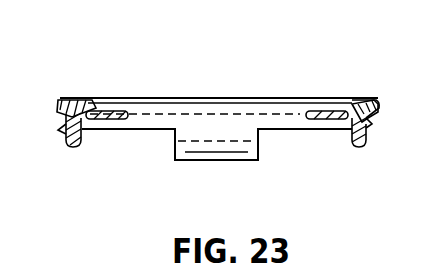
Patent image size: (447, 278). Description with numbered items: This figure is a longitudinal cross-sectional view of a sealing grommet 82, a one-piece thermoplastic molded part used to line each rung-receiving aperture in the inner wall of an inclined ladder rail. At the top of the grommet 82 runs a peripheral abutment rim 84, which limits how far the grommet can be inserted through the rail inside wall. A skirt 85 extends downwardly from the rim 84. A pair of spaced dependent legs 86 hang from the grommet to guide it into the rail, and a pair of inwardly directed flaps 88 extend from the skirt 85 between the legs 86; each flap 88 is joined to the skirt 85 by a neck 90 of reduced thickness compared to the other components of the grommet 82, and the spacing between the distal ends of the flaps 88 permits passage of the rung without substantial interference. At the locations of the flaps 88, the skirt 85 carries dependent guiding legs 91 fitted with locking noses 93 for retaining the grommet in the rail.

The sealing grommet 82 is at (217, 79).
The peripheral abutment rim 84 is at (372, 100).
The skirt 85 is at (368, 119).
The dependent legs 86 is at (210, 153).
The inwardly directed flaps 88 is at (125, 112).
The necks 90 is at (90, 107).
The dependent guiding legs 91 is at (75, 149).
The locking noses 93 is at (64, 128).